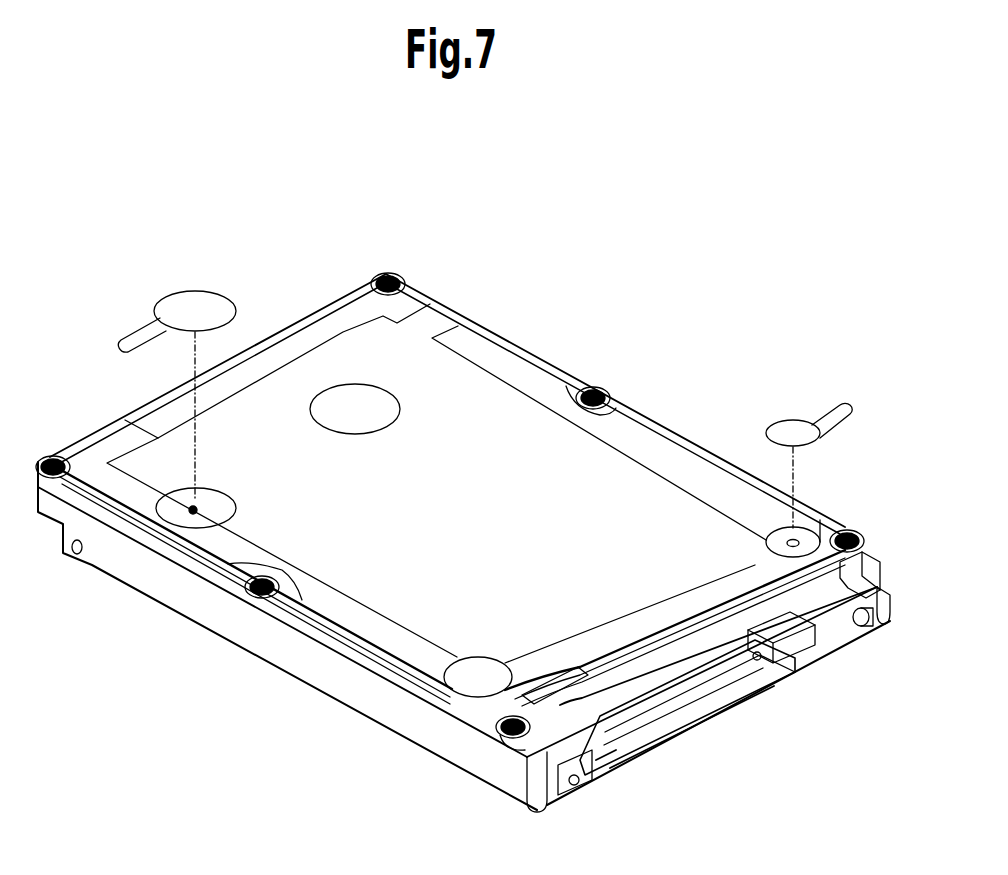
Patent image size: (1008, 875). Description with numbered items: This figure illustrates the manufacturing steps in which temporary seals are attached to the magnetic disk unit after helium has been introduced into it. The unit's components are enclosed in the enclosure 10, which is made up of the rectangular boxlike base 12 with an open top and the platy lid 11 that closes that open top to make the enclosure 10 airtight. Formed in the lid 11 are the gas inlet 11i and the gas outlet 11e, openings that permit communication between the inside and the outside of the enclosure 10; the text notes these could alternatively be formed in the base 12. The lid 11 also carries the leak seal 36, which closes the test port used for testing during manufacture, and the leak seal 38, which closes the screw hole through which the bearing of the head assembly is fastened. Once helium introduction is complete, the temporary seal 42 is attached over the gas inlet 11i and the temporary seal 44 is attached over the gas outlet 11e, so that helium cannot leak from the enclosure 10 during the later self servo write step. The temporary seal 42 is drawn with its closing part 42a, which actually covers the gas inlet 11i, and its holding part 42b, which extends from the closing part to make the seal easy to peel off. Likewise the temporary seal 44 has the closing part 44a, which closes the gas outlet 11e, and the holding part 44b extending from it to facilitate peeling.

The enclosure 10 is at (707, 230).
The lid 11 is at (525, 407).
The gas outlet 11e is at (777, 534).
The gas inlet 11i is at (215, 507).
The base 12 is at (312, 666).
The leak seal 36 is at (474, 668).
The leak seal 38 is at (371, 402).
The temporary seal 42 is at (227, 223).
The closing part 42a is at (193, 305).
The holding part 42b is at (137, 332).
The temporary seal 44 is at (867, 327).
The closing part 44a is at (790, 430).
The holding part 44b is at (835, 405).